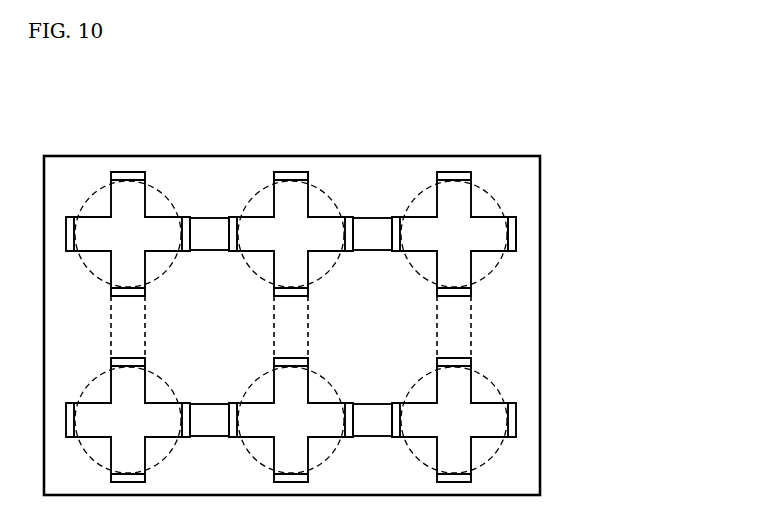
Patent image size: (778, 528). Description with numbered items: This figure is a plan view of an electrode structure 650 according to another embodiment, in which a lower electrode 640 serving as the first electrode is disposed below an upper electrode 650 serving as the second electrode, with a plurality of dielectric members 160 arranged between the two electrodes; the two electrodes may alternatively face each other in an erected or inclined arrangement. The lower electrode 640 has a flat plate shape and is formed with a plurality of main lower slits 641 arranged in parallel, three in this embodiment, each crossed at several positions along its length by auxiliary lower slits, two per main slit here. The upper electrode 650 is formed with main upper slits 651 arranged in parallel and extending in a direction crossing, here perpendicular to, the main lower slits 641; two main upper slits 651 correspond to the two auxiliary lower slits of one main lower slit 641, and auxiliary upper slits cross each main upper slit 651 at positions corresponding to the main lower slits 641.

The dielectric member 160 is at (92, 222).
The lower electrode 640 is at (541, 455).
The main lower slit 641 is at (471, 328).
The upper electrode 650 is at (509, 133).
The main upper slit 651 is at (208, 225).